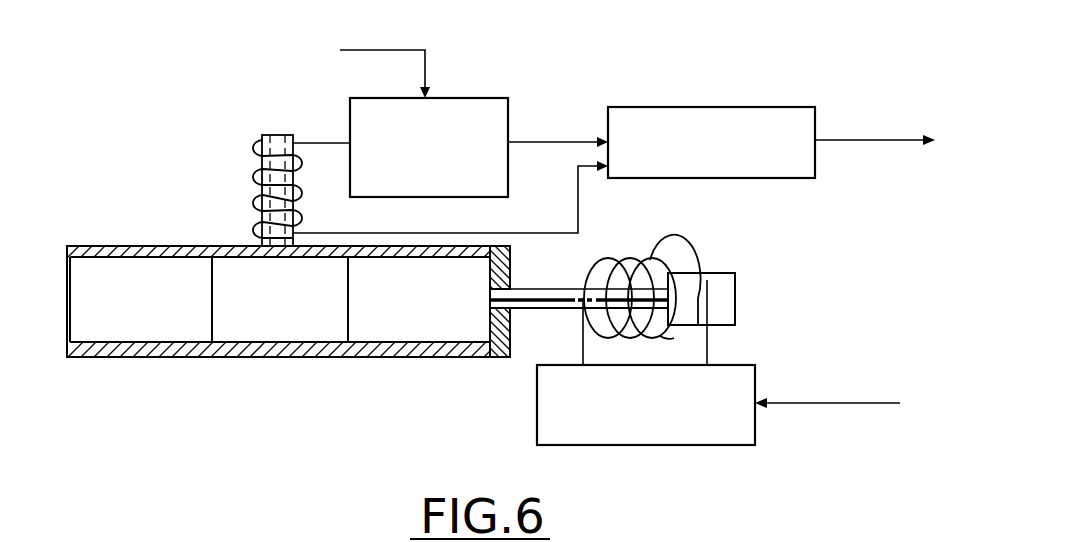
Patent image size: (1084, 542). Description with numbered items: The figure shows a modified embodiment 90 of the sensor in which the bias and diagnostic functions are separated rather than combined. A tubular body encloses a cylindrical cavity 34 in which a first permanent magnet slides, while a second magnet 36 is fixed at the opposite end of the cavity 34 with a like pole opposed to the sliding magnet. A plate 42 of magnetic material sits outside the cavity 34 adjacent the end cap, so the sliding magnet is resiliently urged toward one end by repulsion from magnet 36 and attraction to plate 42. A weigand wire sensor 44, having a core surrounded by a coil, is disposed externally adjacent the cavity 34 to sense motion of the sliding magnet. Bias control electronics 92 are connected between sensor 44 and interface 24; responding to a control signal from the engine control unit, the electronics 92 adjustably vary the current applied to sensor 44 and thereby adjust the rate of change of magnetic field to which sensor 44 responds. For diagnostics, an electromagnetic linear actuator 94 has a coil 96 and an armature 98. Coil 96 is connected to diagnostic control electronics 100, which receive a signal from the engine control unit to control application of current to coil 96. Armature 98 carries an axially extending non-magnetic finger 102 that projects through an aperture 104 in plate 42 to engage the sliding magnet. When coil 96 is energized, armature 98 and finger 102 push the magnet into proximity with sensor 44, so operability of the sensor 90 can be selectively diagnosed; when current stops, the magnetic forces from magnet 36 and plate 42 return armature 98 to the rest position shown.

The modified embodiment 90 is at (134, 222).
The second magnet 36 is at (128, 330).
The cylindrical cavity 34 is at (253, 330).
The plate 42 is at (503, 355).
The weigand wire sensor 44 is at (225, 155).
The bias control electronics 92 is at (462, 96).
The interface 24 is at (715, 106).
The non-magnetic finger 102 is at (561, 310).
The aperture 104 is at (503, 295).
The electromagnetic linear actuator 94 is at (692, 288).
The coil 96 is at (610, 258).
The armature 98 is at (730, 300).
The diagnostic control electronics 100 is at (672, 447).